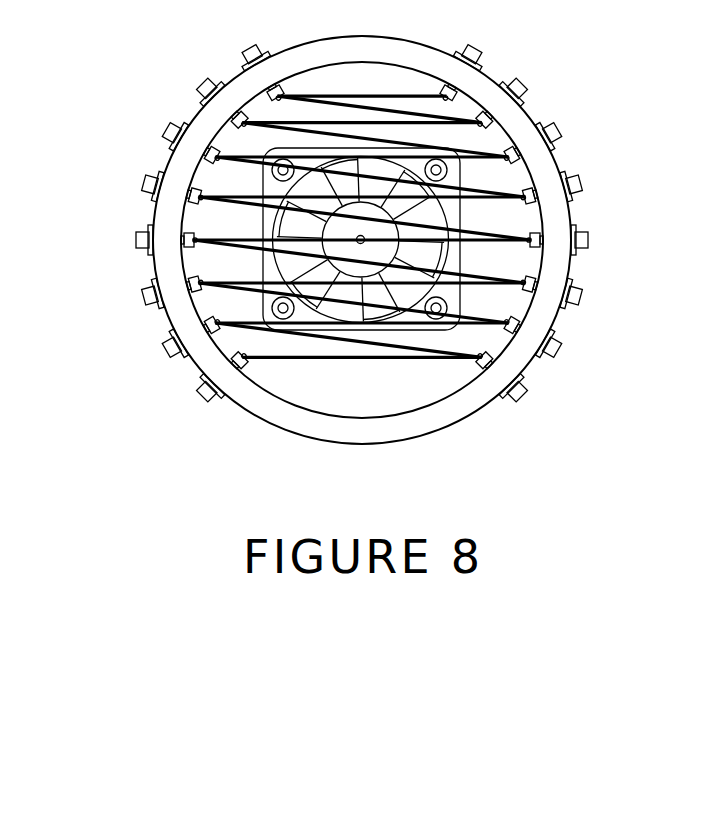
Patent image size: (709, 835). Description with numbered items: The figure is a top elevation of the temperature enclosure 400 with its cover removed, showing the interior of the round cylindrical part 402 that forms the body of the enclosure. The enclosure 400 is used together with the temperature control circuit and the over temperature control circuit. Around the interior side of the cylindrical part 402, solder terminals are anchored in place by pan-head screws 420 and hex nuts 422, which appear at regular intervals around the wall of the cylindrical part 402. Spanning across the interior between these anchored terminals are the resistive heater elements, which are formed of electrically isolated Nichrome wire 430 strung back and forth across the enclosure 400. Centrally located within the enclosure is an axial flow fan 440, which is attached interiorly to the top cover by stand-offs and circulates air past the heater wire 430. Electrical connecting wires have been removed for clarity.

The temperature enclosure 400 is at (372, 261).
The round cylindrical part 402 is at (572, 218).
The pan-head screws 420 is at (166, 134).
The hex nuts 422 is at (168, 147).
The Nichrome 60 wire 430 is at (400, 348).
The axial flow fan 440 is at (428, 328).